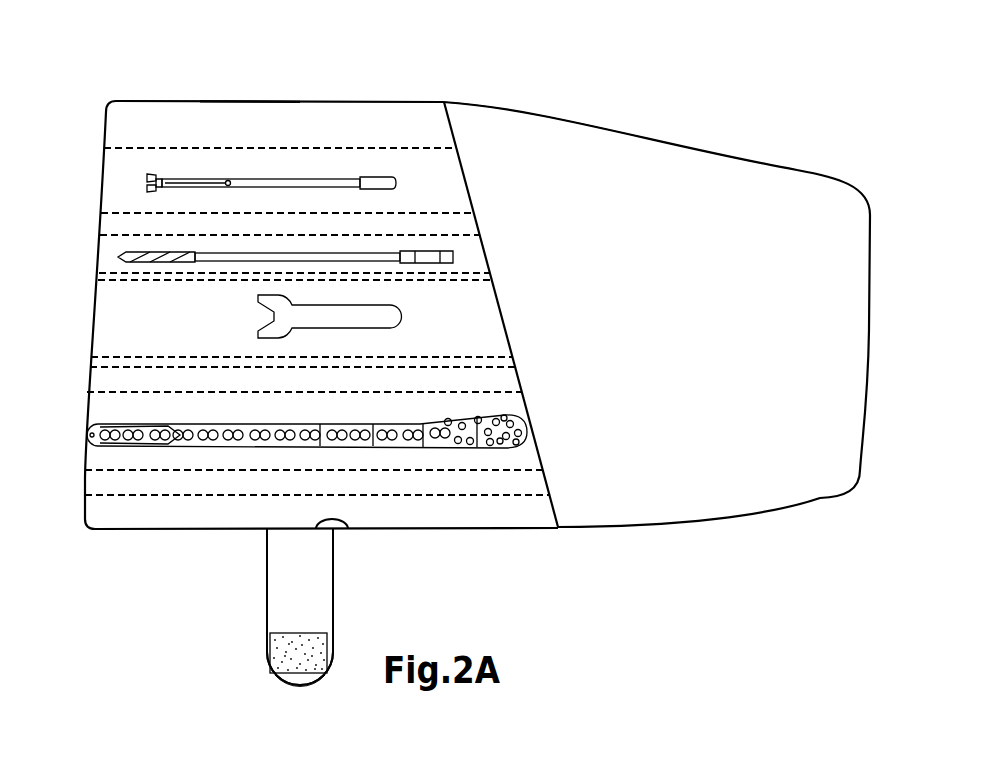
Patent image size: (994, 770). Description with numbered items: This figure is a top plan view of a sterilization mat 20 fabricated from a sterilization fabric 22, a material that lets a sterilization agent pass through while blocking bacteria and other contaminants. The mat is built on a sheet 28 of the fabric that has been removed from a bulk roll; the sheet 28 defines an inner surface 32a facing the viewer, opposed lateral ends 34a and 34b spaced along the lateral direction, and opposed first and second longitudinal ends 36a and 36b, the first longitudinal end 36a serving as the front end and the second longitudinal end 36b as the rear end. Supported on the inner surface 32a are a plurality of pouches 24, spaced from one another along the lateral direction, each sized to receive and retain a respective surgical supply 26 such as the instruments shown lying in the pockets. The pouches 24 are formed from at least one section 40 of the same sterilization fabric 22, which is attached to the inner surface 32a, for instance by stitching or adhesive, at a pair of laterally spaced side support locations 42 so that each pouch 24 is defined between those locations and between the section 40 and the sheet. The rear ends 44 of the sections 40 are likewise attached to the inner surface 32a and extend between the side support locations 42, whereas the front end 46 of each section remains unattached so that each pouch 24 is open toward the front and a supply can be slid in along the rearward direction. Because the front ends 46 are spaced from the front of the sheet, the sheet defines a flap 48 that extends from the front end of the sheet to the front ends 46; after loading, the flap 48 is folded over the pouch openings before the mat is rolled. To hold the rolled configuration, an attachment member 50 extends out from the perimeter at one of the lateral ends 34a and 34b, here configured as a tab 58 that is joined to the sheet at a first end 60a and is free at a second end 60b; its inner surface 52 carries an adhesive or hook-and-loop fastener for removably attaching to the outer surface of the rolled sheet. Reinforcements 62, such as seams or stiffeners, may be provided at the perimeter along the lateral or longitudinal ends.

The sterilization mat 20 is at (660, 92).
The sterilization fabric 22 is at (773, 480).
The pouches 24 is at (137, 322).
The surgical supplies 26 is at (335, 182).
The sheet 28 is at (246, 96).
The inner surface 32a is at (100, 364).
The lateral end 34a is at (170, 530).
The lateral end 34b is at (423, 103).
The first longitudinal end 36a is at (872, 255).
The second longitudinal end 36b is at (100, 250).
The section 40 is at (183, 237).
The side support locations 42 is at (188, 162).
The rear ends 44 is at (115, 213).
The front end 46 is at (427, 180).
The flap 48 is at (797, 170).
The attachment member 50 is at (340, 593).
The inner surface 52 is at (288, 652).
The tab 58 is at (302, 688).
The first end 60a is at (347, 525).
The second end 60b is at (322, 682).
The reinforcements 62 is at (123, 530).